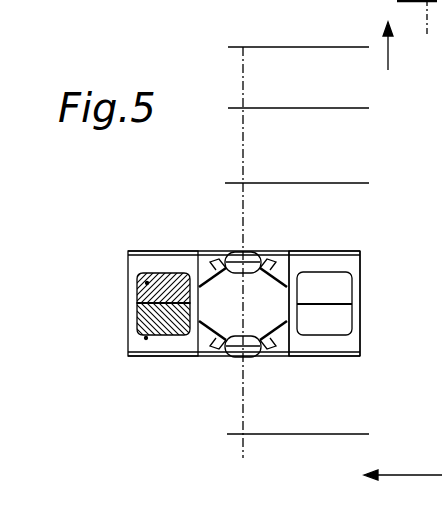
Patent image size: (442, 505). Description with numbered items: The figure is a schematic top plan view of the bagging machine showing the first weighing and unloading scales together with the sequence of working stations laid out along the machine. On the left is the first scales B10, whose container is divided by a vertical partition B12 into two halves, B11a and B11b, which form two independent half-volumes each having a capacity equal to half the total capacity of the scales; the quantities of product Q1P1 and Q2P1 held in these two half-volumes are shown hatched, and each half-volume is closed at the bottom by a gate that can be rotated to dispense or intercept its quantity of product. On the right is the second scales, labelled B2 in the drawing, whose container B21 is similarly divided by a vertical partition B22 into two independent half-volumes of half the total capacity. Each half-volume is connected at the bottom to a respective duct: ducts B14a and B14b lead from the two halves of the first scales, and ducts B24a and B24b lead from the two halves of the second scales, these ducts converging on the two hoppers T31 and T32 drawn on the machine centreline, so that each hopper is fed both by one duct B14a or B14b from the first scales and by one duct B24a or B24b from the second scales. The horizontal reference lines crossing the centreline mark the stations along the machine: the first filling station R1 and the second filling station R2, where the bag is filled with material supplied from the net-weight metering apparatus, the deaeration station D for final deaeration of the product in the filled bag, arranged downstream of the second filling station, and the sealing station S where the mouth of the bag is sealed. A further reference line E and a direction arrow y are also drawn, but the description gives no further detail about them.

The first scales B10 is at (158, 250).
The first half of container B11a is at (148, 323).
The second half of container B11b is at (137, 275).
The vertical partition B12 is at (138, 303).
The quantity of product Q1P1 is at (146, 338).
The quantity of product Q2P1 is at (147, 282).
The duct B14a is at (203, 333).
The duct B14b is at (213, 265).
The duct B24a is at (285, 333).
The duct B24b is at (367, 227).
The hopper T31 is at (223, 350).
The hopper T32 is at (262, 255).
The second body B2 is at (360, 250).
The container of second scales B21 is at (350, 287).
The vertical partition B22 is at (326, 304).
The sealing station S is at (396, 99).
The deaeration station D is at (396, 173).
The first filling station R1 is at (396, 342).
The second filling station R2 is at (396, 239).
The plane E is at (396, 424).
The y axis y is at (388, 478).